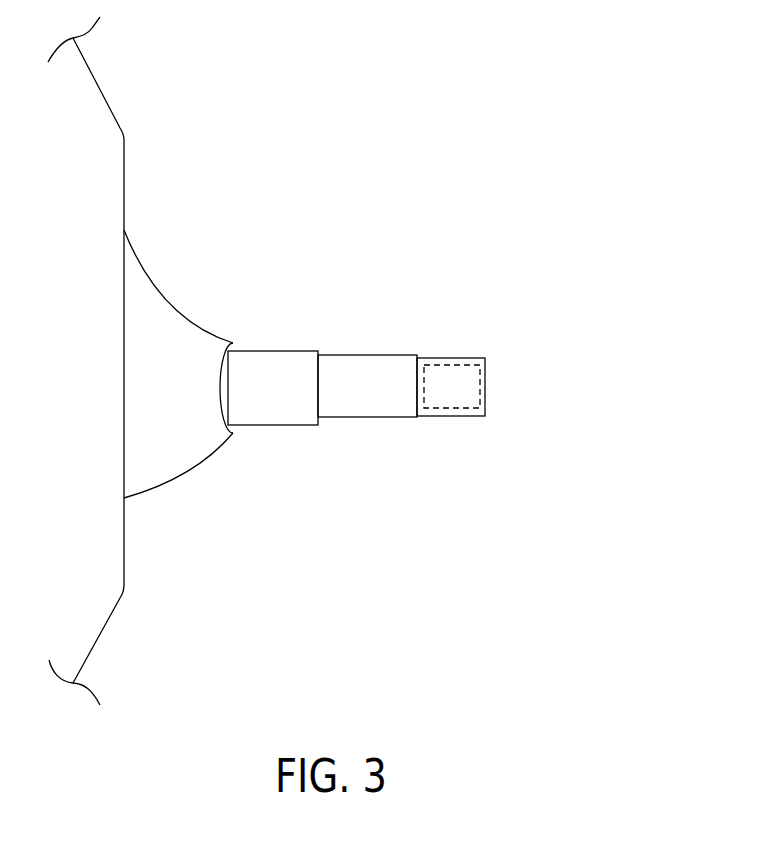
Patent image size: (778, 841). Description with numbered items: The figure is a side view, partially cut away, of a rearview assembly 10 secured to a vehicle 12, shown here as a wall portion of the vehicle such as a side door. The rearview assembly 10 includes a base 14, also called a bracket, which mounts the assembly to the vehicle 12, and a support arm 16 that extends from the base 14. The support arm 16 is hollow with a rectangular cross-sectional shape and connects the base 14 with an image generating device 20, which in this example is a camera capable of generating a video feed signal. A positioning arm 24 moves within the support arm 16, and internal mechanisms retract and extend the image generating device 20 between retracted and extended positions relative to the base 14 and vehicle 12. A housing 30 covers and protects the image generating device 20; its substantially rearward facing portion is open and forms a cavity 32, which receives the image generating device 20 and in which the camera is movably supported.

The rearview assembly 10 is at (306, 361).
The vehicle 12 is at (97, 80).
The base 14 is at (168, 292).
The support arm 16 is at (272, 345).
The image generating device 20 is at (491, 384).
The positioning arm 24 is at (370, 418).
The housing 30 is at (460, 358).
The cavity 32 is at (455, 410).